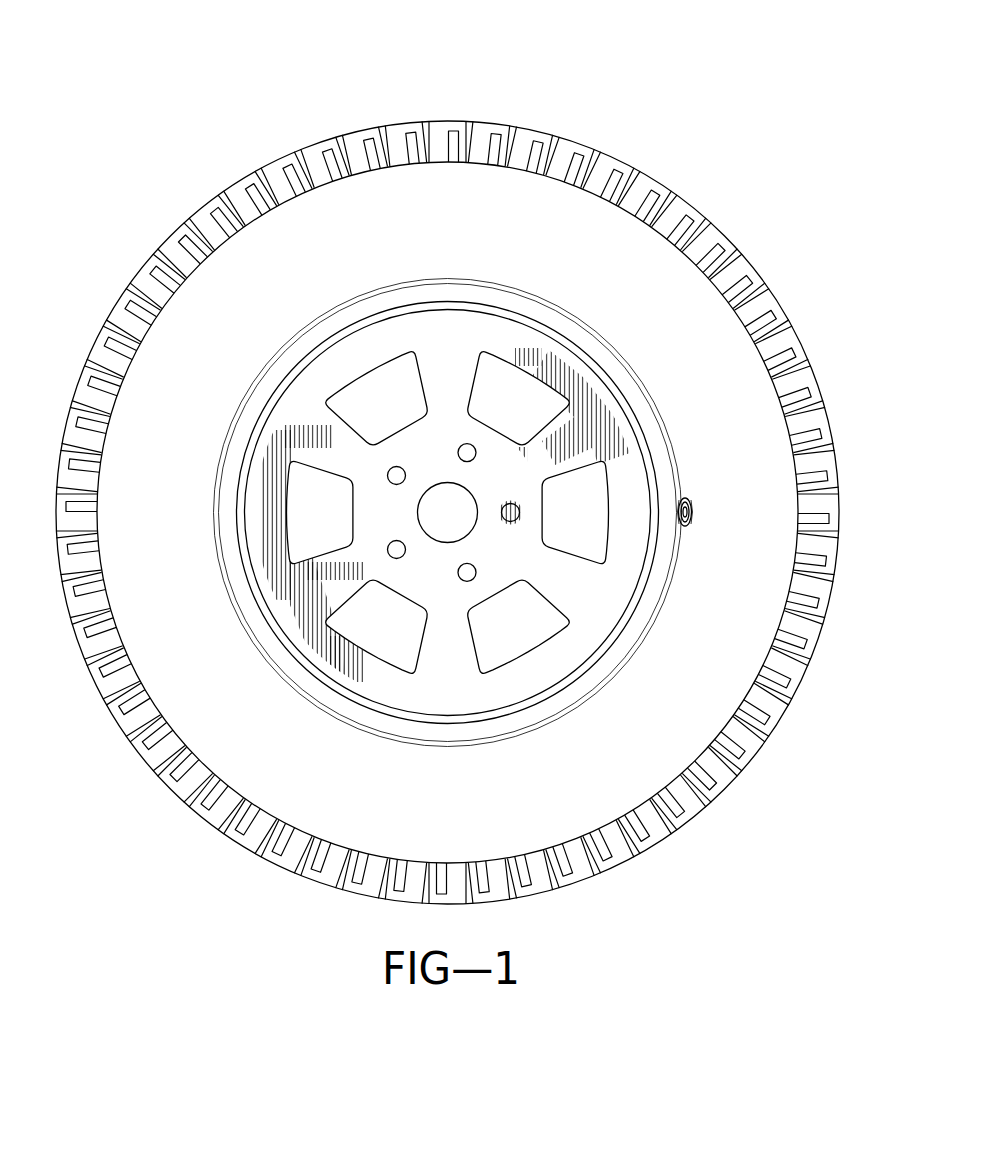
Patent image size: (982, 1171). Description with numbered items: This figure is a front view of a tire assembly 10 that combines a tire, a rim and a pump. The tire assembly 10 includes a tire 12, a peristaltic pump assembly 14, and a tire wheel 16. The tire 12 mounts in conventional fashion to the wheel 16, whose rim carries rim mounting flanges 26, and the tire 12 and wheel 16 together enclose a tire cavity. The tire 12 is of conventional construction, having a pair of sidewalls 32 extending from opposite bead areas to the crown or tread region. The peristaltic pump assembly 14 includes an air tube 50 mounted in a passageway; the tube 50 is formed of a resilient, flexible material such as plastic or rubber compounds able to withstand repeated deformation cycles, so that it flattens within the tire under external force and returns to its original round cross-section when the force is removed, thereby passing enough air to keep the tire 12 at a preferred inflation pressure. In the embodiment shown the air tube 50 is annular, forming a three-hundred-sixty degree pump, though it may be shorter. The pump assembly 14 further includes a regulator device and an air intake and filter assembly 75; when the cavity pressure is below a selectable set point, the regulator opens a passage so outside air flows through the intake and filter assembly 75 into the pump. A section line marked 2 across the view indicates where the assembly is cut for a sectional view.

The section line 2- 2 is at (448, 348).
The tire assembly 10 is at (760, 146).
The tire 12 is at (197, 199).
The peristaltic pump assembly 14 is at (404, 745).
The tire wheel 16 is at (292, 408).
The rim mounting flanges 26 is at (583, 348).
The sidewalls 32 is at (588, 232).
The air tube 50 is at (262, 660).
The air intake and filter assembly 75 is at (700, 504).